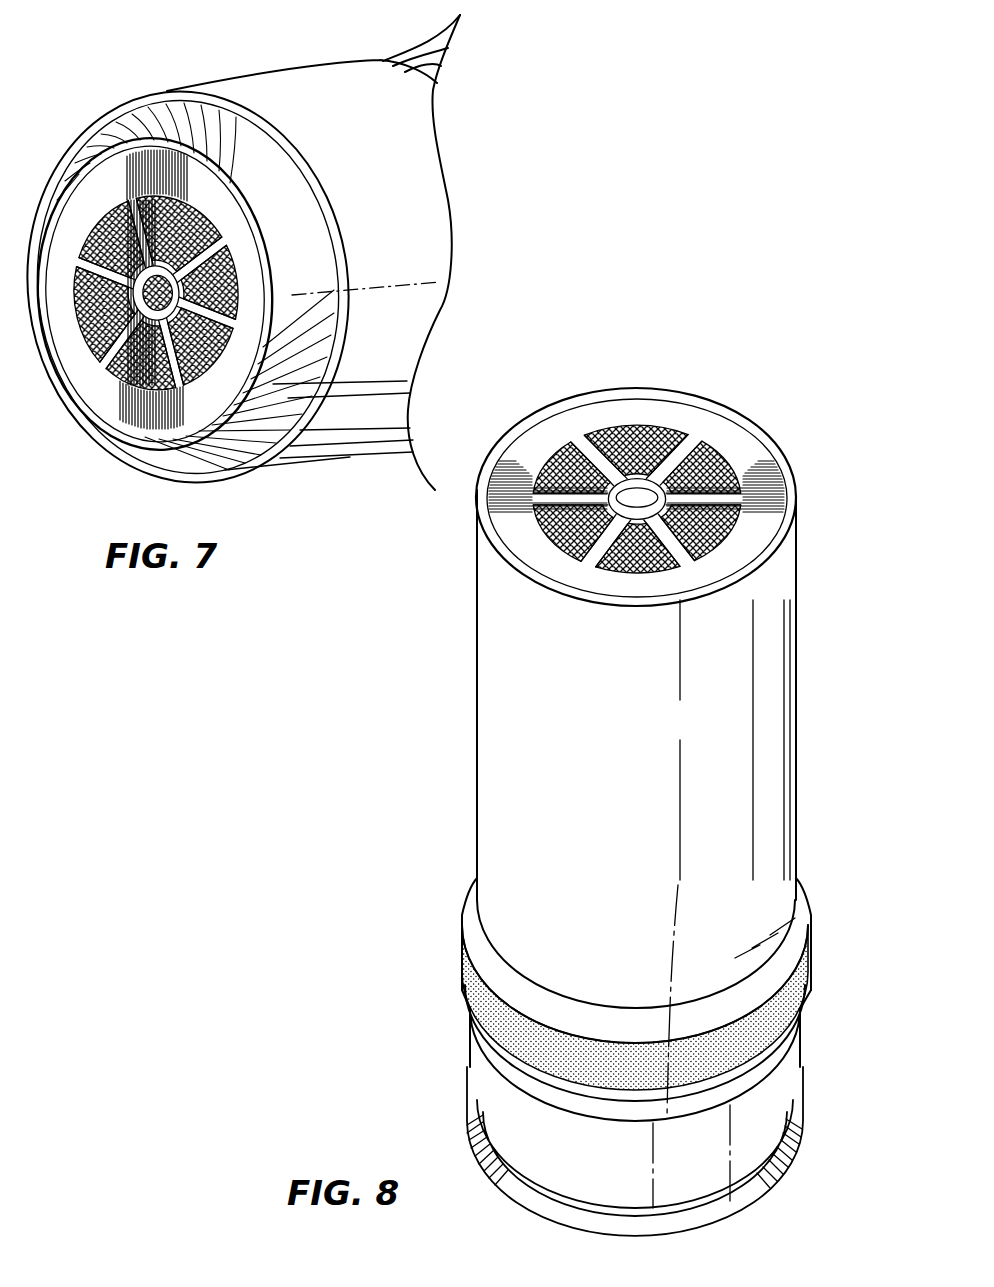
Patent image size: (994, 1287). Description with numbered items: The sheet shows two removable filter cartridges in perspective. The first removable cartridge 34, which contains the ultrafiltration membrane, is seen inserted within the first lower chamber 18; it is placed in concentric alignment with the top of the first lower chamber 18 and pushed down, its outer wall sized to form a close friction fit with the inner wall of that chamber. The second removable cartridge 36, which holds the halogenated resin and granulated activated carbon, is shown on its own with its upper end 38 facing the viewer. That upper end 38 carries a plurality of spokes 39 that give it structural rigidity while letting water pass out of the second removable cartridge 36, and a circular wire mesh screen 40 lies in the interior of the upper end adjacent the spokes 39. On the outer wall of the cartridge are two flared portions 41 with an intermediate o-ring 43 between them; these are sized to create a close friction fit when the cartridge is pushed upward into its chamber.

In FIG. 7, the first lower chamber 18 is at (367, 363).
In FIG. 7, the first removable cartridge 34 is at (253, 167).
In FIG. 8, the second removable cartridge 36 is at (465, 770).
In FIG. 8, the end face 38 is at (747, 450).
In FIG. 8, the spokes 39 is at (585, 440).
In FIG. 8, the wire mesh screen 40 is at (695, 477).
In FIG. 8, the flared portions 41 is at (798, 920).
In FIG. 8, the o-ring 43 is at (472, 1006).